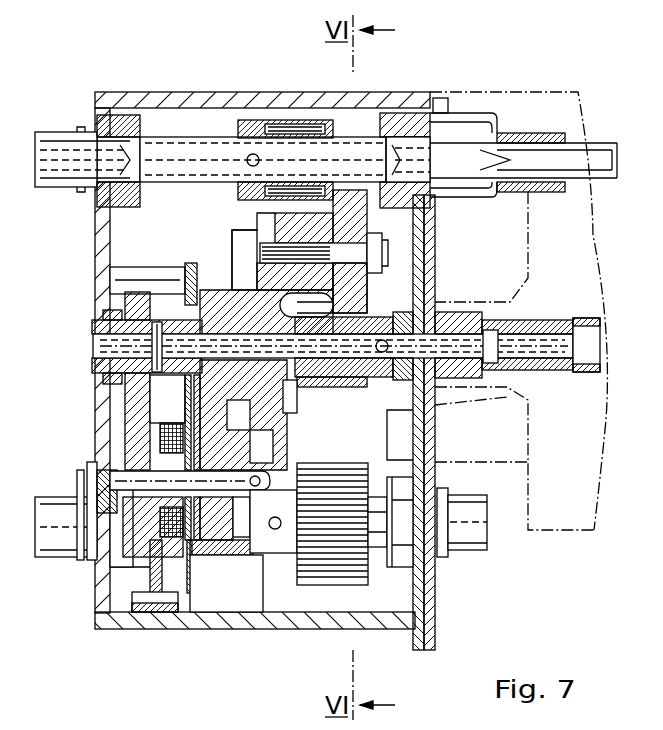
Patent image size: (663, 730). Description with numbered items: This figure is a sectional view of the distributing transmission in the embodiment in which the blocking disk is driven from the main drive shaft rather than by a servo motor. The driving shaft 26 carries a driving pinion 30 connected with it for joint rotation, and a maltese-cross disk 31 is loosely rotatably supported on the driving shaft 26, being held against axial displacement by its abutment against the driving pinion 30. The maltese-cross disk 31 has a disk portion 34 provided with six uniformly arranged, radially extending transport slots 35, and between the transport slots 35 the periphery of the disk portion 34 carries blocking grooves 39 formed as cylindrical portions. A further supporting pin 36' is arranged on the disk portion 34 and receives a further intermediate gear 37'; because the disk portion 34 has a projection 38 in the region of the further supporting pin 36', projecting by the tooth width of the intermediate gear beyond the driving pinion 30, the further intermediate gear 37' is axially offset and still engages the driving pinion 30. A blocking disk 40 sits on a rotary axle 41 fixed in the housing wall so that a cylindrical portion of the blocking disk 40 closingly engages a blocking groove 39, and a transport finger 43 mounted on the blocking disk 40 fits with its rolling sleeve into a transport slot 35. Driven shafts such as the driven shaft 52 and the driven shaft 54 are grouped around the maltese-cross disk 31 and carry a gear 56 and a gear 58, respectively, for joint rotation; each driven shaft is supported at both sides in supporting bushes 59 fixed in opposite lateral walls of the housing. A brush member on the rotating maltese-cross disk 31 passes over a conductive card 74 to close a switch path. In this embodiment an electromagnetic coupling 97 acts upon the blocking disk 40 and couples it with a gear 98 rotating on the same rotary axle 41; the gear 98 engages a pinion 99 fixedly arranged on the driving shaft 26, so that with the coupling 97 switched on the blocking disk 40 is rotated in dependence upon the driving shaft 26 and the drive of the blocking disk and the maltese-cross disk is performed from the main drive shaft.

The driving shaft 26 is at (110, 343).
The driving pinion 30 is at (361, 388).
The maltese-cross disk 31 is at (218, 307).
The disk portion 34 is at (283, 290).
The transport slots 35 is at (243, 242).
The further supporting pin 36' is at (369, 243).
The further intermediate gear 37' is at (405, 281).
The projection 38 is at (315, 222).
The blocking grooves 39 is at (260, 450).
The blocking disk 40 is at (252, 423).
The rotary axle 41 is at (130, 475).
The transport finger 43 is at (245, 550).
The driven shaft 52 is at (205, 150).
The driven shaft 54 is at (376, 538).
The gear 56 is at (302, 125).
The gear 58 is at (323, 557).
The supporting bushes 59 is at (55, 133).
The conductive card 74 is at (187, 283).
The electromagnetic coupling 97 is at (172, 548).
The gear 98 is at (133, 423).
The pinion 99 is at (125, 388).